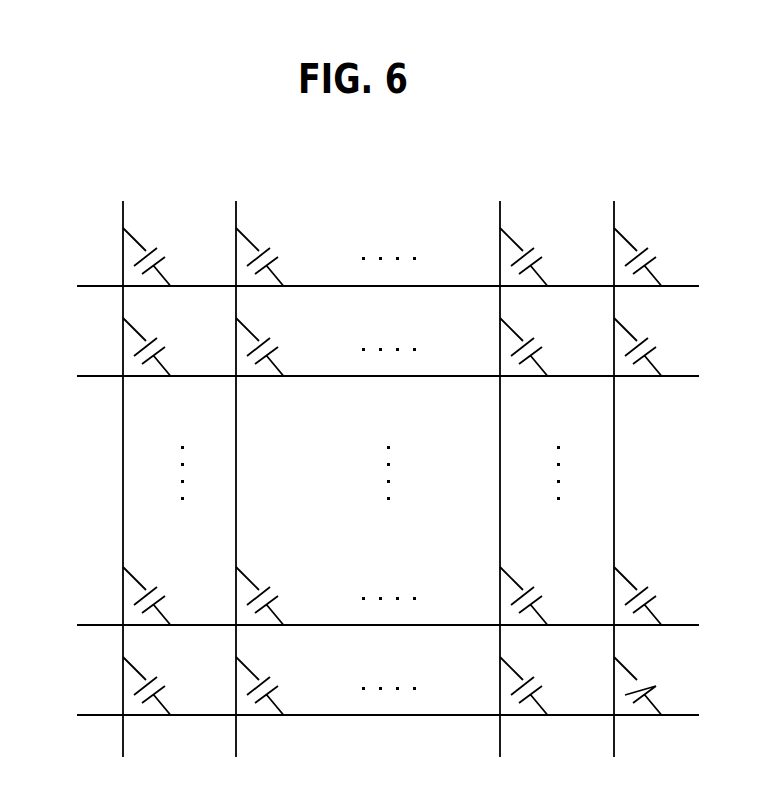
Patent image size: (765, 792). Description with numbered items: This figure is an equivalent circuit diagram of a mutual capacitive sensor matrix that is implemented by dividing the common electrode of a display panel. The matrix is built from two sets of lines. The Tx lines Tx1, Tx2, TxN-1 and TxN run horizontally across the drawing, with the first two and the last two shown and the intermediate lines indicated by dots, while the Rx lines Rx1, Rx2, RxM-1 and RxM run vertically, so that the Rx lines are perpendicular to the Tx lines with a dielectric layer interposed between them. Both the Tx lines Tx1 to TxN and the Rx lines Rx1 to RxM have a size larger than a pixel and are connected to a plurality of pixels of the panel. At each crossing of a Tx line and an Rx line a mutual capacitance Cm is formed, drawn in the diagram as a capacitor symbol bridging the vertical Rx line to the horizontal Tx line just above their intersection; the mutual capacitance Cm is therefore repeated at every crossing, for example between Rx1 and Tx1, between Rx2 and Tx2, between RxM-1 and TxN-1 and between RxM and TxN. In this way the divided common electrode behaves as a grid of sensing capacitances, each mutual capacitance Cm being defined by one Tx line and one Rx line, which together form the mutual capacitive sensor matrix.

The mutual capacitance Cm is at (156, 426).
The Rx line Rx1 is at (122, 466).
The Rx line Rx2 is at (237, 466).
The Rx line RxM-1 is at (499, 466).
The Rx line RxM is at (615, 466).
The Tx line Tx1 is at (367, 285).
The Tx line Tx2 is at (367, 375).
The Tx line TxN-1 is at (355, 624).
The Tx line TxN is at (366, 714).